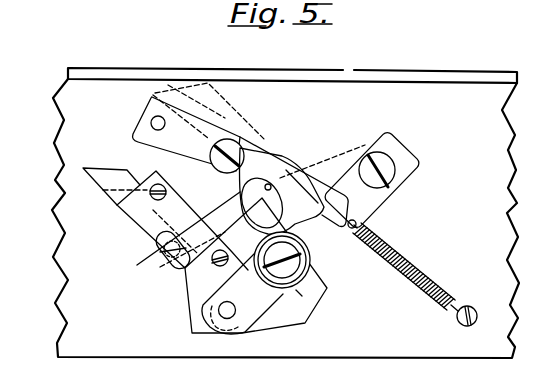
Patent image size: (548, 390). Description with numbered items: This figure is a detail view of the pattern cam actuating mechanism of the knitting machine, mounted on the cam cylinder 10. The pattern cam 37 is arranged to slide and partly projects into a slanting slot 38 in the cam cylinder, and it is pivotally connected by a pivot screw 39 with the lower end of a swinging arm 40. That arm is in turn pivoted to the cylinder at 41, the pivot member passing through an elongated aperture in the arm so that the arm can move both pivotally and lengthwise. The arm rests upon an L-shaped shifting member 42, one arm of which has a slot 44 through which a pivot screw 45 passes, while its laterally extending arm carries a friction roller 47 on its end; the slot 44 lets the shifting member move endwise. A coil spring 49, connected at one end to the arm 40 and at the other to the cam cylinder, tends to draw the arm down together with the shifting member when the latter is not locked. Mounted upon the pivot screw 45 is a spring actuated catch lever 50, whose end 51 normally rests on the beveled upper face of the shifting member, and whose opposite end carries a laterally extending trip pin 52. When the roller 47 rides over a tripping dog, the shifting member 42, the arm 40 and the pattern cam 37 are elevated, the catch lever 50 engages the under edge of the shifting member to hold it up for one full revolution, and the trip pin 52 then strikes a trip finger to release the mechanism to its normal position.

The frame 10 is at (64, 94).
The pattern cam 37 is at (200, 277).
The slanting slot 38 is at (108, 190).
The pivot screw 39 is at (214, 308).
The swinging arm 40 is at (247, 272).
The pivot 41 is at (395, 166).
The L-shaped shifting member 42 is at (318, 296).
The slot 44 is at (268, 187).
The pivot screw 45 is at (237, 150).
The friction roller 47 is at (294, 289).
The coil spring 49 is at (408, 270).
The catch lever 50 is at (311, 190).
The end of catch lever 51 is at (333, 256).
The trip pin 52 is at (151, 123).